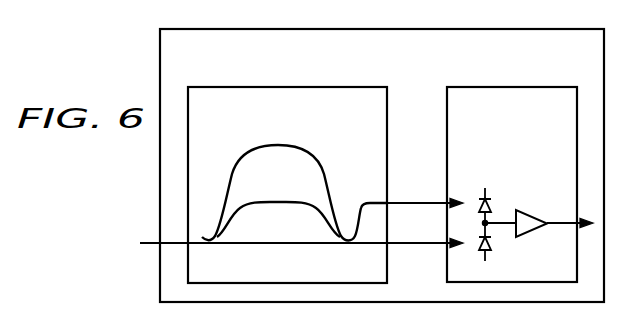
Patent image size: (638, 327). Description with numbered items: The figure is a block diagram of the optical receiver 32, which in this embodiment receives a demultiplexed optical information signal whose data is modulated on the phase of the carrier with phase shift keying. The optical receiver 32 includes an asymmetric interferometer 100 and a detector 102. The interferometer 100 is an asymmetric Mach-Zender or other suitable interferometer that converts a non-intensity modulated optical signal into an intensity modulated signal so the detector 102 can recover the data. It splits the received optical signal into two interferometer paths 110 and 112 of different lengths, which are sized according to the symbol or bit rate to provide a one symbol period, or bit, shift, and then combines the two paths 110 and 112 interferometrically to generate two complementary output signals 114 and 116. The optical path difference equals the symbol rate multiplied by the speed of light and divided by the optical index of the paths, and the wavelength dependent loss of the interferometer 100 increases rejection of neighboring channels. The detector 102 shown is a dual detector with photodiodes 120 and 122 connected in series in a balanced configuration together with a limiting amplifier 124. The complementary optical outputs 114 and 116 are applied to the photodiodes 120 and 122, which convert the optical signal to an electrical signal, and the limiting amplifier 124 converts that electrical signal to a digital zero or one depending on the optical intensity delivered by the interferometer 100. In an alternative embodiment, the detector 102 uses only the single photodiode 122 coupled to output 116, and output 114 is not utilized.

The optical receiver 32 is at (160, 195).
The asymmetric interferometer 100 is at (248, 83).
The detector 102 is at (508, 85).
The interferometer path 110 is at (278, 143).
The interferometer path 112 is at (277, 205).
The output signal 114 is at (405, 202).
The output signal 116 is at (405, 245).
The photodiode 120 is at (497, 199).
The photodiode 122 is at (493, 238).
The limiting amplifier 124 is at (532, 213).